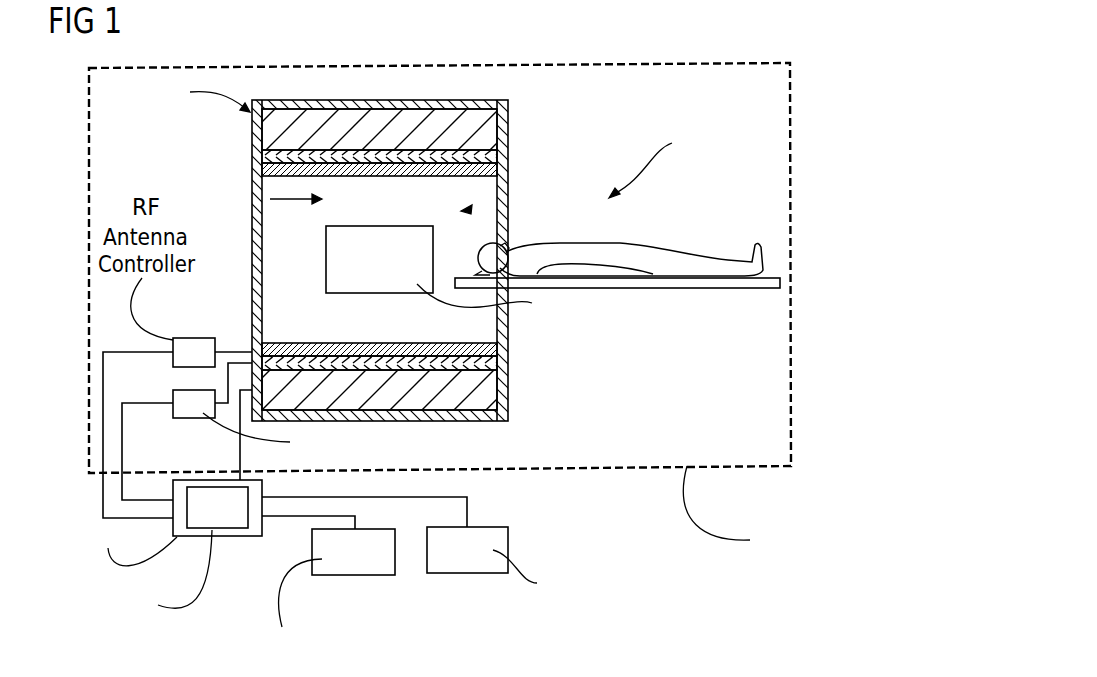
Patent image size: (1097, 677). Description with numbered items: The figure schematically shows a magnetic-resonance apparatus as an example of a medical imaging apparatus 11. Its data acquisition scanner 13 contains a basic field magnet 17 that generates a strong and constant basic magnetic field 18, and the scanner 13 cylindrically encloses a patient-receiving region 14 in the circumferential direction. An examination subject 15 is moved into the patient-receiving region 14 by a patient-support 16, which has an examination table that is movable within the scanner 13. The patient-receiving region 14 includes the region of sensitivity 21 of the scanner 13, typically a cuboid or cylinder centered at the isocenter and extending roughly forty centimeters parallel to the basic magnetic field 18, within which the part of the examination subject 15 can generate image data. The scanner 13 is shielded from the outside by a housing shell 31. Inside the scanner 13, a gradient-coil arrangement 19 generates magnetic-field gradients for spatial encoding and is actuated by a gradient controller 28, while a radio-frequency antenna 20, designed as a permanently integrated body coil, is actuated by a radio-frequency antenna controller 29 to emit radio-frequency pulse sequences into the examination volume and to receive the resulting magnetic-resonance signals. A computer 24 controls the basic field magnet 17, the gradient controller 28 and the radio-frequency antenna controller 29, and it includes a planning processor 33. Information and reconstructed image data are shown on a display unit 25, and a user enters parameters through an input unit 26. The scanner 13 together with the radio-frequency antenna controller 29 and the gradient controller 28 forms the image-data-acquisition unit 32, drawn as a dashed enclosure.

The medical imaging apparatus 11 is at (594, 162).
The data acquisition scanner 13 is at (252, 128).
The patient-receiving region 14 is at (470, 210).
The examination subject 15 is at (705, 265).
The patient-support 16 is at (683, 288).
The basic field magnet 17 is at (490, 138).
The basic magnetic field 18 is at (270, 199).
The gradient-coil arrangement 19 is at (253, 157).
The radio-frequency antenna 20 is at (253, 168).
The region of sensitivity 21 is at (326, 248).
The computer 24 is at (188, 537).
The display unit 25 is at (357, 575).
The input unit 26 is at (463, 573).
The gradient controller 28 is at (193, 420).
The radio-frequency antenna controller 29 is at (198, 337).
The housing shell 31 is at (502, 120).
The image-data-acquisition unit 32 is at (630, 466).
The planning processor 33 is at (230, 537).